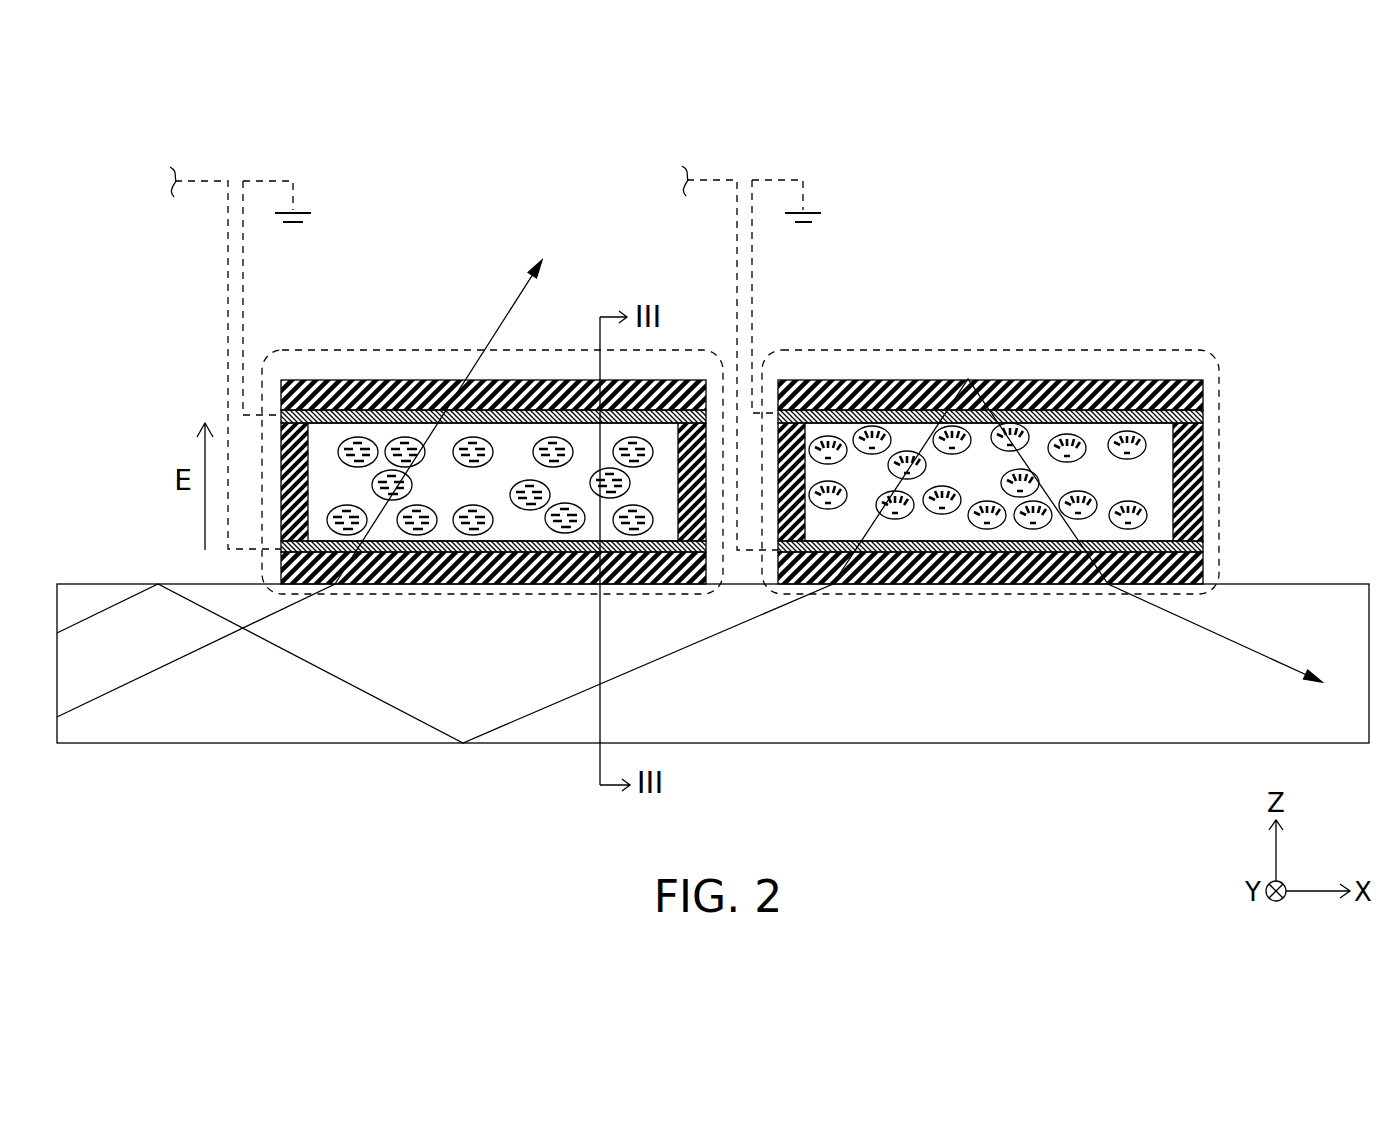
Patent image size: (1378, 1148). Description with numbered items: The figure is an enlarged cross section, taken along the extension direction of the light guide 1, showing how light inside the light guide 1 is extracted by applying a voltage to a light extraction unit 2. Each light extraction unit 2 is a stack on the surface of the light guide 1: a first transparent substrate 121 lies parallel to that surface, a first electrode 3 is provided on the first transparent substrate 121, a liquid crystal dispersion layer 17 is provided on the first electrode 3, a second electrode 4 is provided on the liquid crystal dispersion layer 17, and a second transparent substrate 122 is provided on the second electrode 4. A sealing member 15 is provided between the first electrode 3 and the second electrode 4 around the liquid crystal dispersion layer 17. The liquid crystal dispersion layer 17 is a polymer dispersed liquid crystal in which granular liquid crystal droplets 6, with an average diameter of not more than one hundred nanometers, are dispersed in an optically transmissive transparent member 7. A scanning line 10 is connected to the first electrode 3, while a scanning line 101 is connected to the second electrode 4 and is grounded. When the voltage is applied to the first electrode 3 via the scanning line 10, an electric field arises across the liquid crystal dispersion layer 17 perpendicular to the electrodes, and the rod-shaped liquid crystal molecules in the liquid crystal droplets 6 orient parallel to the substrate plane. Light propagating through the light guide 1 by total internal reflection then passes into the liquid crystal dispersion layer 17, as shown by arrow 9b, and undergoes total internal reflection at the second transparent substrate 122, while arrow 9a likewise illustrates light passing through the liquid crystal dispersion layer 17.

The light guide 1 is at (960, 702).
The light extraction unit 2 is at (372, 349).
The first electrode 3 is at (1203, 543).
The second electrode 4 is at (1203, 418).
The liquid crystal droplets 6 is at (1135, 430).
The transparent member 7 is at (1092, 435).
The arrow 9a is at (120, 690).
The arrow 9b is at (360, 690).
The scanning line 10 is at (263, 180).
The sealing member 15 is at (1203, 477).
The liquid crystal dispersion layer 17 is at (748, 377).
The scanning line 101 is at (228, 295).
The first transparent substrate 121 is at (1203, 568).
The second transparent substrate 122 is at (1203, 390).